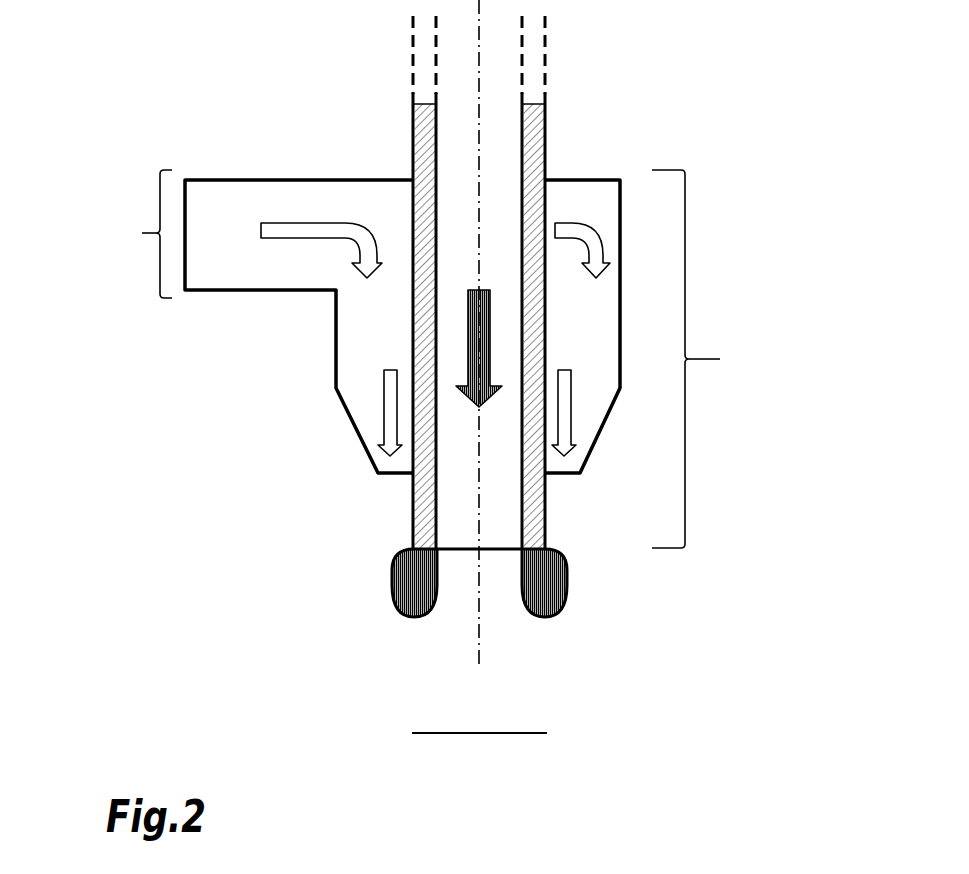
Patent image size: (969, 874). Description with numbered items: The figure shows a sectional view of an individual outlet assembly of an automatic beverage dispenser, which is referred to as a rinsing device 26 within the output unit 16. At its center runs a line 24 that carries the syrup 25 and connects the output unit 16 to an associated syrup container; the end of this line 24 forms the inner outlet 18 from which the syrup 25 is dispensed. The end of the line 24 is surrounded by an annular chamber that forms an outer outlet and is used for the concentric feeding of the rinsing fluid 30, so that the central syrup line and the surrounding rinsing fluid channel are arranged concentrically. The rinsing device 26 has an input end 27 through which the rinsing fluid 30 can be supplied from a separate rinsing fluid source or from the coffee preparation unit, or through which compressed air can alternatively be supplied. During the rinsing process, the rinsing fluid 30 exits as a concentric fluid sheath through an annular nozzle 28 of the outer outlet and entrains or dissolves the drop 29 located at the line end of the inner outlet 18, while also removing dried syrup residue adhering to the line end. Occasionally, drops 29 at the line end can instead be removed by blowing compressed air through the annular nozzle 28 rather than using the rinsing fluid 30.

The output unit 16 is at (712, 359).
The inner outlet 18 is at (578, 545).
The line 24 is at (423, 135).
The syrup 25 is at (478, 356).
The rinsing device 26 is at (336, 343).
The input end 27 is at (252, 234).
The annular nozzle 28 is at (378, 473).
The drop 29 is at (543, 593).
The rinsing fluid 30 is at (315, 223).